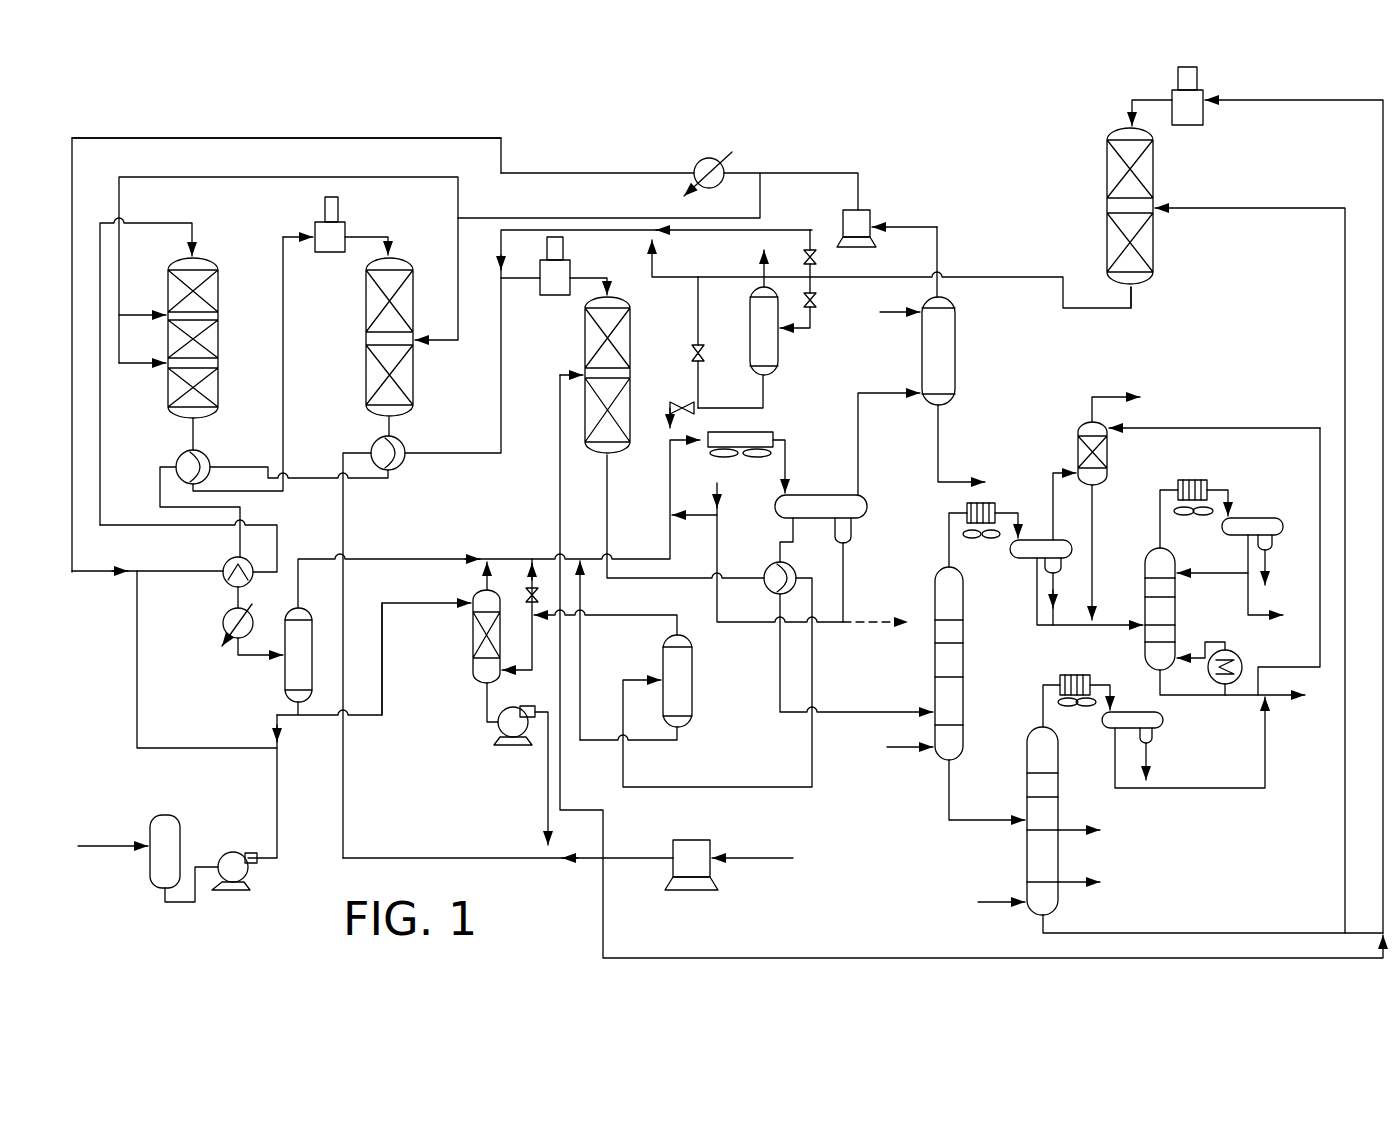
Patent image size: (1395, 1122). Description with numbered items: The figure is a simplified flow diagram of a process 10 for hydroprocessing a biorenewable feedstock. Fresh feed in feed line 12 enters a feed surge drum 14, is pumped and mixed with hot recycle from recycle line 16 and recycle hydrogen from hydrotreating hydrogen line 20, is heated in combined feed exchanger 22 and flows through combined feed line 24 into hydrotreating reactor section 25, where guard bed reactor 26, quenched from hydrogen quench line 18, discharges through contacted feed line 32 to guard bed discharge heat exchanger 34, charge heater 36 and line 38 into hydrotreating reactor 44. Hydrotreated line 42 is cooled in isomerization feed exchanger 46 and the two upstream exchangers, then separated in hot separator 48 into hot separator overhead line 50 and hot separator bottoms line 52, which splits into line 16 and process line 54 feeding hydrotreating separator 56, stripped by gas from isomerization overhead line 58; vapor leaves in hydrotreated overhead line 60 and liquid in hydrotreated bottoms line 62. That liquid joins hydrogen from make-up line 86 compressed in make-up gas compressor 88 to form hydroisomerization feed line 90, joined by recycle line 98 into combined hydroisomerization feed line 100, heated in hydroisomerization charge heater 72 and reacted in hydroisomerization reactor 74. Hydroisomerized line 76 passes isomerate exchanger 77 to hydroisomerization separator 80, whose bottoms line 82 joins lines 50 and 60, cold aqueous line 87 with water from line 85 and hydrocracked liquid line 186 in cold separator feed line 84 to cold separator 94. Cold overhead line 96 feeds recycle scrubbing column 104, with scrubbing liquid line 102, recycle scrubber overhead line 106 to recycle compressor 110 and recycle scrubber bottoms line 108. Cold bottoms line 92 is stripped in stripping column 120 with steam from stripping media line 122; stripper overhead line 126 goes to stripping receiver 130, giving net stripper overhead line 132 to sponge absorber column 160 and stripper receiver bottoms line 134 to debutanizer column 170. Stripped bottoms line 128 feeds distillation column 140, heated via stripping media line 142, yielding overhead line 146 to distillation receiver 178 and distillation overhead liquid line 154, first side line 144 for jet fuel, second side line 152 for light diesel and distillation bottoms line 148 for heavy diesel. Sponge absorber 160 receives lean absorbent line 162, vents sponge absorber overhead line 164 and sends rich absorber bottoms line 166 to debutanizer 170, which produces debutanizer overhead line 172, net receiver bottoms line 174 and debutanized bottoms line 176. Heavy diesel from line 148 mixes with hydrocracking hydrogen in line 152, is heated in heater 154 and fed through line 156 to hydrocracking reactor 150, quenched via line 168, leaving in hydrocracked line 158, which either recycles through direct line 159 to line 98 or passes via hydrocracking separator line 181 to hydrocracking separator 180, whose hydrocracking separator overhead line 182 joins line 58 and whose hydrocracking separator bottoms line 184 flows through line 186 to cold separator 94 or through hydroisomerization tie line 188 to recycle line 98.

The process 10 is at (555, 98).
The feed line 12 is at (92, 846).
The feed surge drum 14 is at (150, 825).
The recycle line 16 is at (288, 748).
The hydrogen quench line 18 is at (578, 216).
The hydrotreating hydrogen line 20 is at (225, 138).
The combined feed exchanger 22 is at (235, 560).
The combined feed line 24 is at (172, 580).
The hydrotreating reactor section 25 is at (140, 116).
The guard bed reactor 26 is at (198, 258).
The contacted feed line 32 is at (191, 436).
The guard bed discharge heat exchanger 34 is at (178, 462).
The charge heater 36 is at (318, 224).
The second reactor inlet line 38 is at (390, 240).
The hydrotreated line 42 is at (388, 434).
The hydrotreating reactor 44 is at (366, 356).
The isomerization feed exchanger 46 is at (404, 446).
The hot separator 48 is at (284, 685).
The hot separator overhead line 50 is at (412, 556).
The hot separator bottoms line 52 is at (290, 715).
The process line 54 is at (410, 602).
The hydrotreating separator 56 is at (471, 670).
The isomerization overhead line 58 is at (645, 618).
The hydrotreated overhead line 60 is at (485, 582).
The hydrotreated bottoms line 62 is at (486, 716).
The hydroisomerization charge heater 72 is at (565, 245).
The hydroisomerization reactor 74 is at (632, 334).
The hydroisomerized line 76 is at (607, 462).
The isomerate exchanger 77 is at (766, 590).
The hydroisomerization separator 80 is at (694, 680).
The hydroisomerization bottoms line 82 is at (581, 650).
The cold separator feed line 84 is at (668, 508).
The water line 85 is at (712, 483).
The make-up line 86 is at (790, 857).
The cold aqueous line 87 is at (845, 580).
The make-up gas compressor 88 is at (692, 840).
The hydroisomerization feed line 90 is at (483, 857).
The cold bottoms line 92 is at (778, 544).
The cold separator 94 is at (868, 510).
The cold overhead line 96 is at (860, 474).
The recycle line 98 is at (500, 250).
The combined hydroisomerization feed line 100 is at (522, 282).
The scrubbing liquid line 102 is at (900, 318).
The recycle scrubbing column 104 is at (957, 330).
The recycle scrubber overhead line 106 is at (940, 232).
The recycle scrubber bottoms line 108 is at (940, 432).
The recycle compressor 110 is at (842, 228).
The stripping column 120 is at (936, 568).
The stripping media line 122 is at (888, 748).
The stripper overhead line 126 is at (951, 565).
The stripped bottoms line 128 is at (948, 803).
The stripping receiver 130 is at (1036, 530).
The net stripper overhead line 132 is at (1052, 470).
The stripper receiver bottoms line 134 is at (1036, 605).
The distillation column 140 is at (1028, 728).
The stripping media line 142 is at (978, 903).
The first side line 144 is at (1073, 828).
The overhead line 146 is at (1042, 684).
The distillation bottoms line 148 is at (1118, 933).
The hydrocracking reactor 150 is at (1155, 165).
The second side line 152 is at (1066, 880).
The heater 154 is at (1198, 78).
The line 156 is at (1382, 150).
The hydrocracked line 158 is at (1133, 303).
The direct line 159 is at (745, 233).
The sponge absorber column 160 is at (1078, 422).
The lean absorbent line 162 is at (1165, 427).
The sponge absorber overhead line 164 is at (1105, 394).
The rich absorber bottoms line 166 is at (1094, 585).
The line 168 is at (1344, 268).
The debutanizer column 170 is at (1145, 556).
The debutanizer overhead line 172 is at (1162, 534).
The net receiver bottoms line 174 is at (1247, 594).
The debutanized bottoms line 176 is at (1210, 696).
The distillation receiver 178 is at (1128, 710).
The hydrocracking separator 180 is at (779, 355).
The hydrocracking separator line 181 is at (832, 323).
The hydrocracking separator overhead line 182 is at (762, 272).
The hydrocracking separator bottoms line 184 is at (762, 396).
The hydrocracked liquid line 186 is at (672, 405).
The hydroisomerization tie line 188 is at (696, 312).